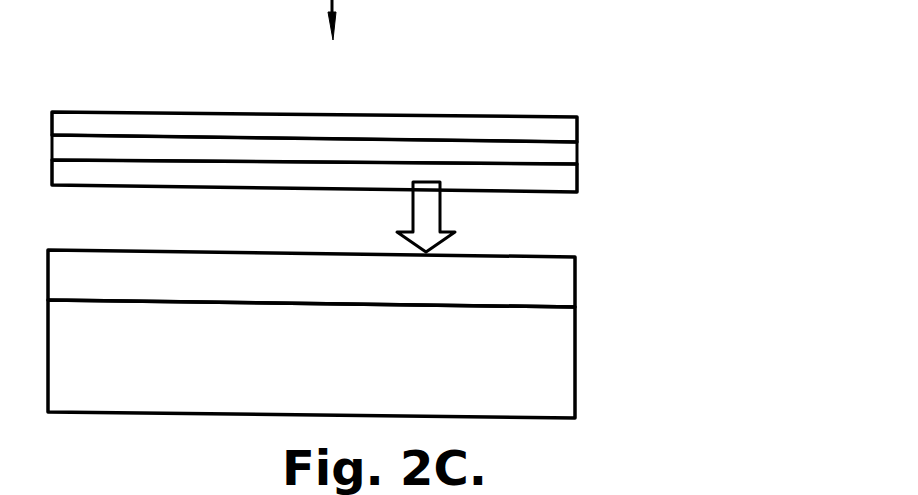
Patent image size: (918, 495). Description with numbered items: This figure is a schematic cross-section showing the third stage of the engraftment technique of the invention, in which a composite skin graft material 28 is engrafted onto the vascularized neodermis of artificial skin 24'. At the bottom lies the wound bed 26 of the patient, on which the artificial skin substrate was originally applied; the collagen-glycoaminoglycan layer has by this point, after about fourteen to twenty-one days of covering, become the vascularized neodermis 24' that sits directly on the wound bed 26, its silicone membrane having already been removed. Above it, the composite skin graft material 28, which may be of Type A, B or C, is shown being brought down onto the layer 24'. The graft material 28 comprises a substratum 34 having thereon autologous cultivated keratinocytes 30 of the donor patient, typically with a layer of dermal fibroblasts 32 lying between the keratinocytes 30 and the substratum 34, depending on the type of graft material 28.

The composite skin graft material 28 is at (429, 139).
The autologous cultivated keratinocytes 30 is at (533, 107).
The layer of dermal fibroblasts 32 is at (588, 160).
The substratum 34 is at (535, 199).
The vascularized neodermis of artificial skin 24' is at (367, 282).
The wound bed 26 is at (585, 363).